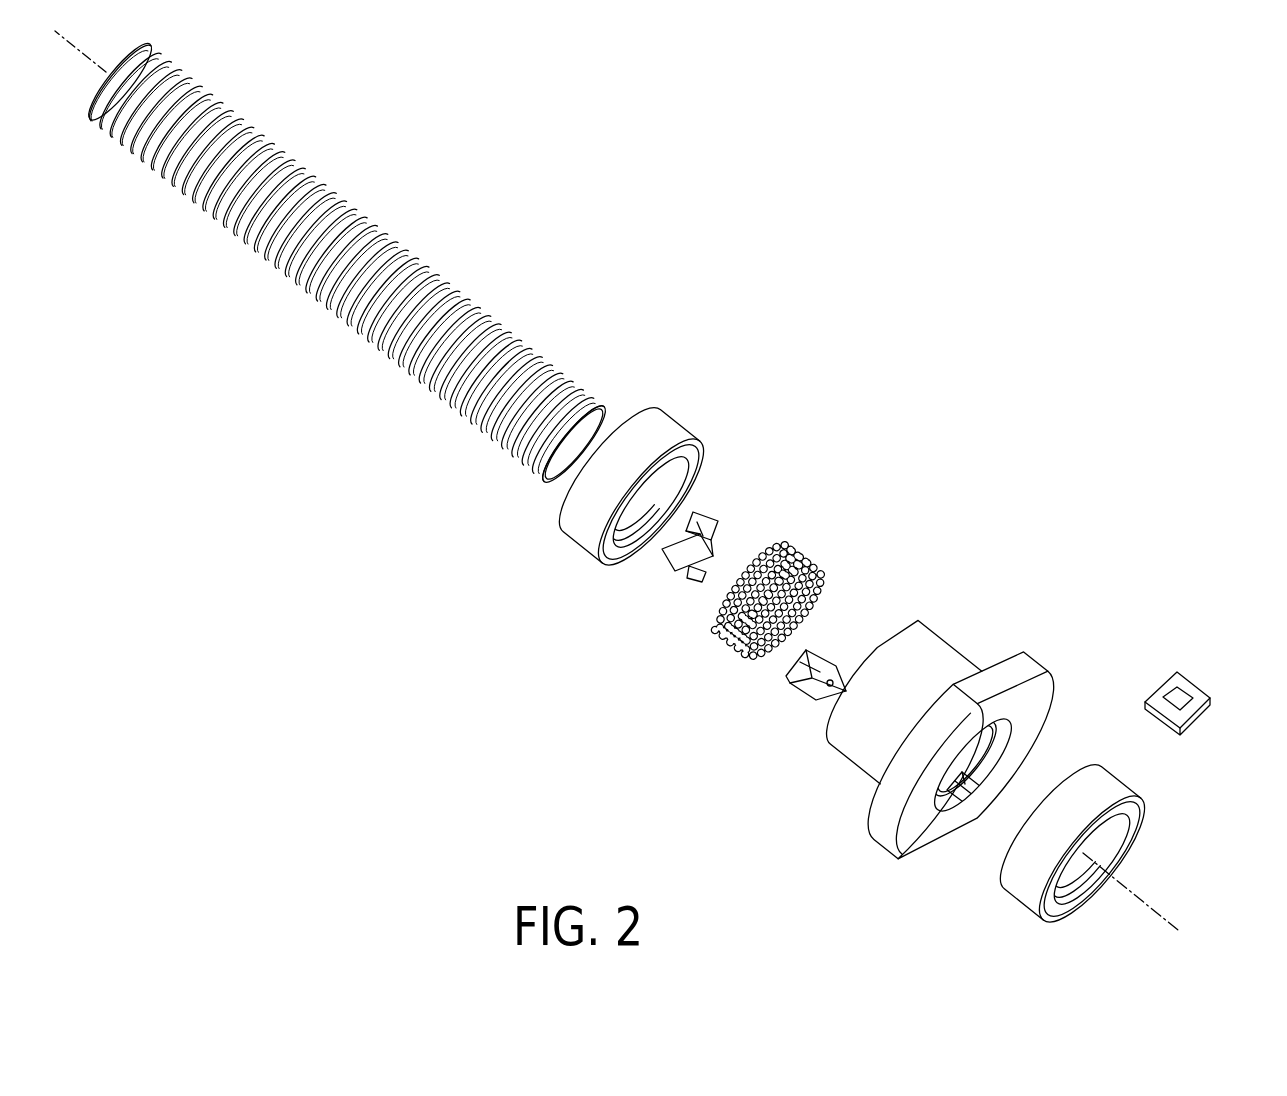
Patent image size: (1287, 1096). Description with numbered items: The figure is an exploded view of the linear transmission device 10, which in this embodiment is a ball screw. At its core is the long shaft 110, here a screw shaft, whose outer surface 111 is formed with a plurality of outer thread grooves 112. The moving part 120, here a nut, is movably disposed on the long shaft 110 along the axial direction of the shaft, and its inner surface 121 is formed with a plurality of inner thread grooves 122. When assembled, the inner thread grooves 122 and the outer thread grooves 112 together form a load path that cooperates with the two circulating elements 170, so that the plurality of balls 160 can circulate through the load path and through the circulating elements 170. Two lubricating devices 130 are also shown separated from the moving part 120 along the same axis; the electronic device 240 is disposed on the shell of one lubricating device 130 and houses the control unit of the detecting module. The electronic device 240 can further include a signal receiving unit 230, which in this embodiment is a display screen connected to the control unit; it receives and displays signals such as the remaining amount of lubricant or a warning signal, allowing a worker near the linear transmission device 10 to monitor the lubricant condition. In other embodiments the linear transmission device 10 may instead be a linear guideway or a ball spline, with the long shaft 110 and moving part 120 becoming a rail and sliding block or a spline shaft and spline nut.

The linear transmission device 10 is at (703, 176).
The long shaft 110 is at (334, 260).
The outer surface 111 is at (400, 257).
The outer thread grooves 112 is at (524, 314).
The moving part 120 is at (962, 713).
The inner surface 121 is at (985, 718).
The inner thread grooves 122 is at (1000, 742).
The lubricating device 130 is at (663, 433).
The balls 160 is at (793, 548).
The circulating elements 170 is at (700, 513).
The signal receiving unit 230 is at (1181, 697).
The electronic device 240 is at (1211, 693).